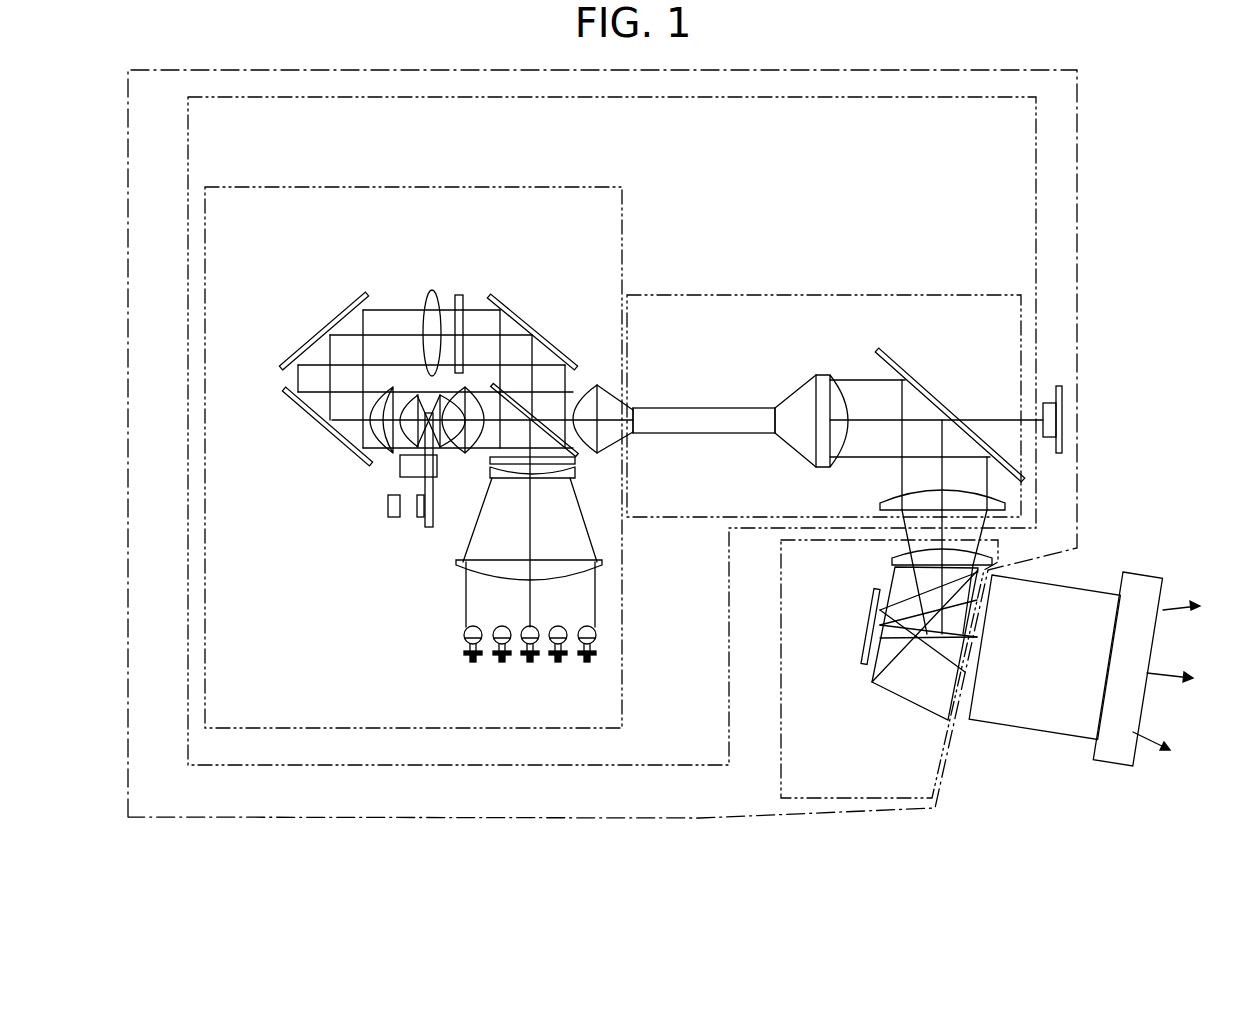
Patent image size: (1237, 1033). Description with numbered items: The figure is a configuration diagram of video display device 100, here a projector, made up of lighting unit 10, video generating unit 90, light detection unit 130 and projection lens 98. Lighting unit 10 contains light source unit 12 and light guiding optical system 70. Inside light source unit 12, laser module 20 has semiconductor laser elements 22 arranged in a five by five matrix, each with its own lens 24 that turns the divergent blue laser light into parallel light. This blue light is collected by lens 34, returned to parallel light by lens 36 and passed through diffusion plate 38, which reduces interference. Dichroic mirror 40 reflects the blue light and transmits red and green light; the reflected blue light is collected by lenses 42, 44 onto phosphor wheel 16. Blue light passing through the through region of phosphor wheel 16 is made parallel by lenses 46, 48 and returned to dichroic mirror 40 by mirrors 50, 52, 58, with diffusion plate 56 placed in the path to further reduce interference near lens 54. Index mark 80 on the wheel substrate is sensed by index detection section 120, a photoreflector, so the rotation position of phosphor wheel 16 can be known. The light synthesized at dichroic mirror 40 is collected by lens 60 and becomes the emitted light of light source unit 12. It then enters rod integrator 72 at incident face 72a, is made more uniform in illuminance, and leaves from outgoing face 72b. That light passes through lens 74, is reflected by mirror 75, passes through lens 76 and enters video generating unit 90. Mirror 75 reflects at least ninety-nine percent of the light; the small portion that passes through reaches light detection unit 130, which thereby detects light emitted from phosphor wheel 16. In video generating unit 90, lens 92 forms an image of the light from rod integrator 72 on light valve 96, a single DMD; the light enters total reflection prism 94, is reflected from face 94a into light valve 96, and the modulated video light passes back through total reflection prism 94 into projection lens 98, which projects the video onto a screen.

The video display device 100 is at (1078, 145).
The lighting unit 10 is at (893, 97).
The light source unit 12 is at (573, 187).
The light guiding optical system 70 is at (892, 295).
The video generating unit 90 is at (780, 735).
The light detection unit 130 is at (1062, 422).
The laser module 20 is at (464, 659).
The semiconductor laser elements 22 is at (463, 658).
The lenses 24 is at (463, 633).
The lens 34 is at (462, 562).
The lens 36 is at (568, 470).
The diffusion plate 38 is at (570, 462).
The dichroic mirror 40 is at (573, 455).
The lens 42 is at (463, 455).
The lens 44 is at (447, 453).
The lens 46 is at (407, 452).
The lens 48 is at (392, 452).
The phosphor wheel 16 is at (428, 527).
The index mark 80 is at (417, 517).
The index detection section 120 is at (392, 510).
The mirror 50 is at (318, 423).
The mirror 52 is at (328, 313).
The lens 54 is at (428, 298).
The diffusion plate 56 is at (463, 295).
The mirror 58 is at (515, 312).
The lens 60 is at (597, 383).
The rod integrator 72 is at (704, 401).
The incident face 72a is at (650, 433).
The outgoing face 72b is at (767, 427).
The lens 74 is at (827, 377).
The mirror 75 is at (928, 390).
The lens 76 is at (893, 502).
The lens 92 is at (900, 560).
The total reflection prism 94 is at (914, 669).
The face 94a is at (883, 690).
The light valve 96 is at (870, 632).
The projection lens 98 is at (1022, 713).